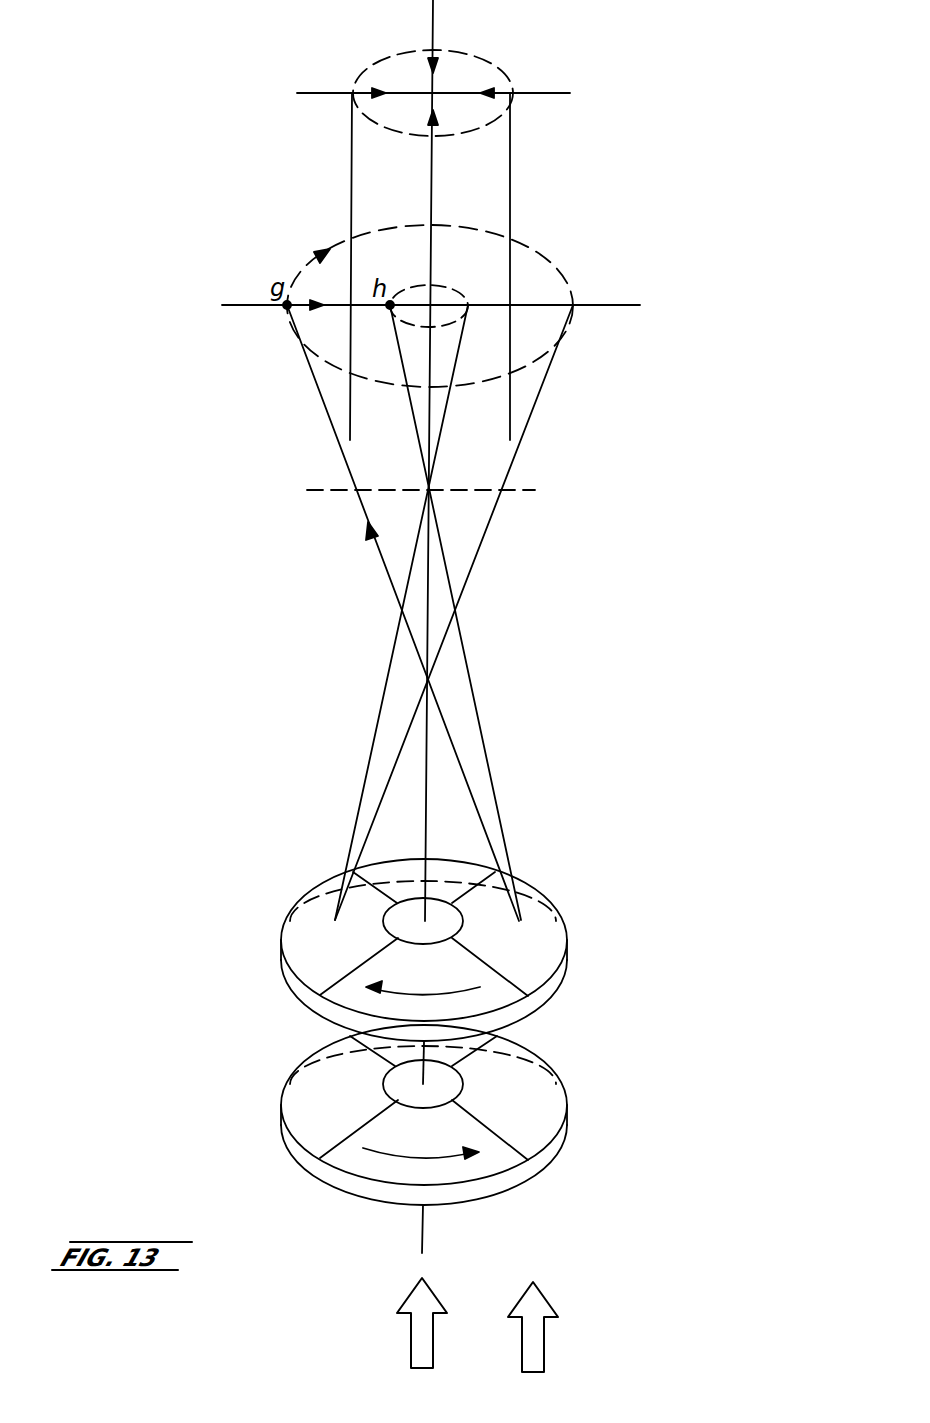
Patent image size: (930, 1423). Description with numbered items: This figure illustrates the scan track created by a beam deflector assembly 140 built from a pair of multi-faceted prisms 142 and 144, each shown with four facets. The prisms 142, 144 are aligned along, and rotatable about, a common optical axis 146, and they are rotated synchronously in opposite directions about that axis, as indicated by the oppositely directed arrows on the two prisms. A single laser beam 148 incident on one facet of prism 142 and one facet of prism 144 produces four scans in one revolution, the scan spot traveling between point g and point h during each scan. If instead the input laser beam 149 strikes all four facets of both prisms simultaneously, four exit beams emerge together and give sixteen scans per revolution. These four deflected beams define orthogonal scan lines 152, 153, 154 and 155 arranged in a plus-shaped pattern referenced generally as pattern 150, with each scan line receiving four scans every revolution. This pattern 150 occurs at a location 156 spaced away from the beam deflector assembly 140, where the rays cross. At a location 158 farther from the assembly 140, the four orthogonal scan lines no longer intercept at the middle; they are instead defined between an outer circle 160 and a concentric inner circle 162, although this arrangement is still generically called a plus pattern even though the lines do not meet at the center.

The beam deflector assembly 140 is at (497, 1032).
The multi-faceted prism 142 is at (567, 955).
The multi-faceted prism 144 is at (567, 1120).
The optical axis 146 is at (423, 1237).
The laser beam 148 is at (545, 1350).
The laser beam 149 is at (411, 1350).
The "+" pattern 150 is at (458, 80).
The scan line 152 is at (490, 92).
The scan line 153 is at (412, 53).
The scan line 154 is at (375, 100).
The scan line 155 is at (435, 118).
The location 156 is at (543, 488).
The location 158 is at (613, 308).
The outer circle 160 is at (322, 364).
The inner circle 162 is at (466, 302).